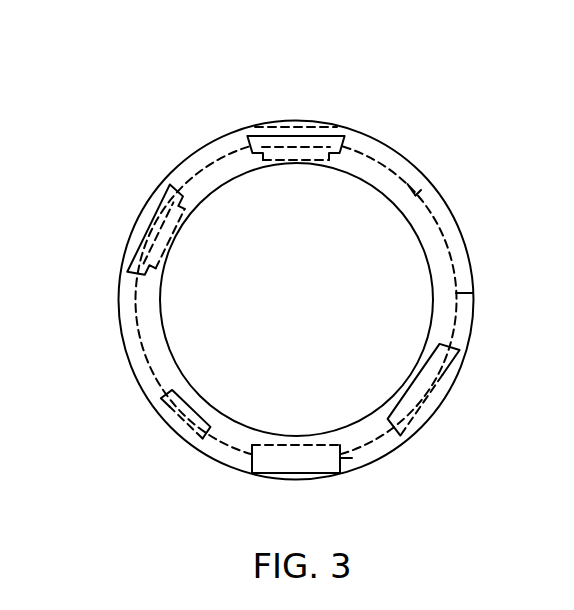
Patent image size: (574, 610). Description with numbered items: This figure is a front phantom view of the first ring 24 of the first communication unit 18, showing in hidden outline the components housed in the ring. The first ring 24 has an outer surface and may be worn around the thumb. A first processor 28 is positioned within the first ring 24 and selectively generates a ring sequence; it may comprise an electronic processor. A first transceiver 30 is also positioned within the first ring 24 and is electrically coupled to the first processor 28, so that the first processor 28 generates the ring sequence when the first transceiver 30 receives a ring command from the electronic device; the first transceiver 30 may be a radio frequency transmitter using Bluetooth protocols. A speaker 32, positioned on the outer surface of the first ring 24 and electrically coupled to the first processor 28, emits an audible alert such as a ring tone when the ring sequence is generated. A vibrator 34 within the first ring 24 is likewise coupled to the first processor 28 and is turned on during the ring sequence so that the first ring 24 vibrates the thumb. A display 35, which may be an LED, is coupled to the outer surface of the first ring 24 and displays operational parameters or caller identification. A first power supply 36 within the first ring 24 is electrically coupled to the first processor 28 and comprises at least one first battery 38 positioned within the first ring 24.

The first communication unit 18 is at (409, 98).
The first ring 24 is at (193, 153).
The first processor 28 is at (178, 411).
The first transceiver 30 is at (136, 233).
The speaker 32 is at (318, 134).
The vibrator 34 is at (438, 380).
The display 35 is at (418, 180).
The first power supply 36 is at (251, 455).
The first battery 38 is at (342, 455).